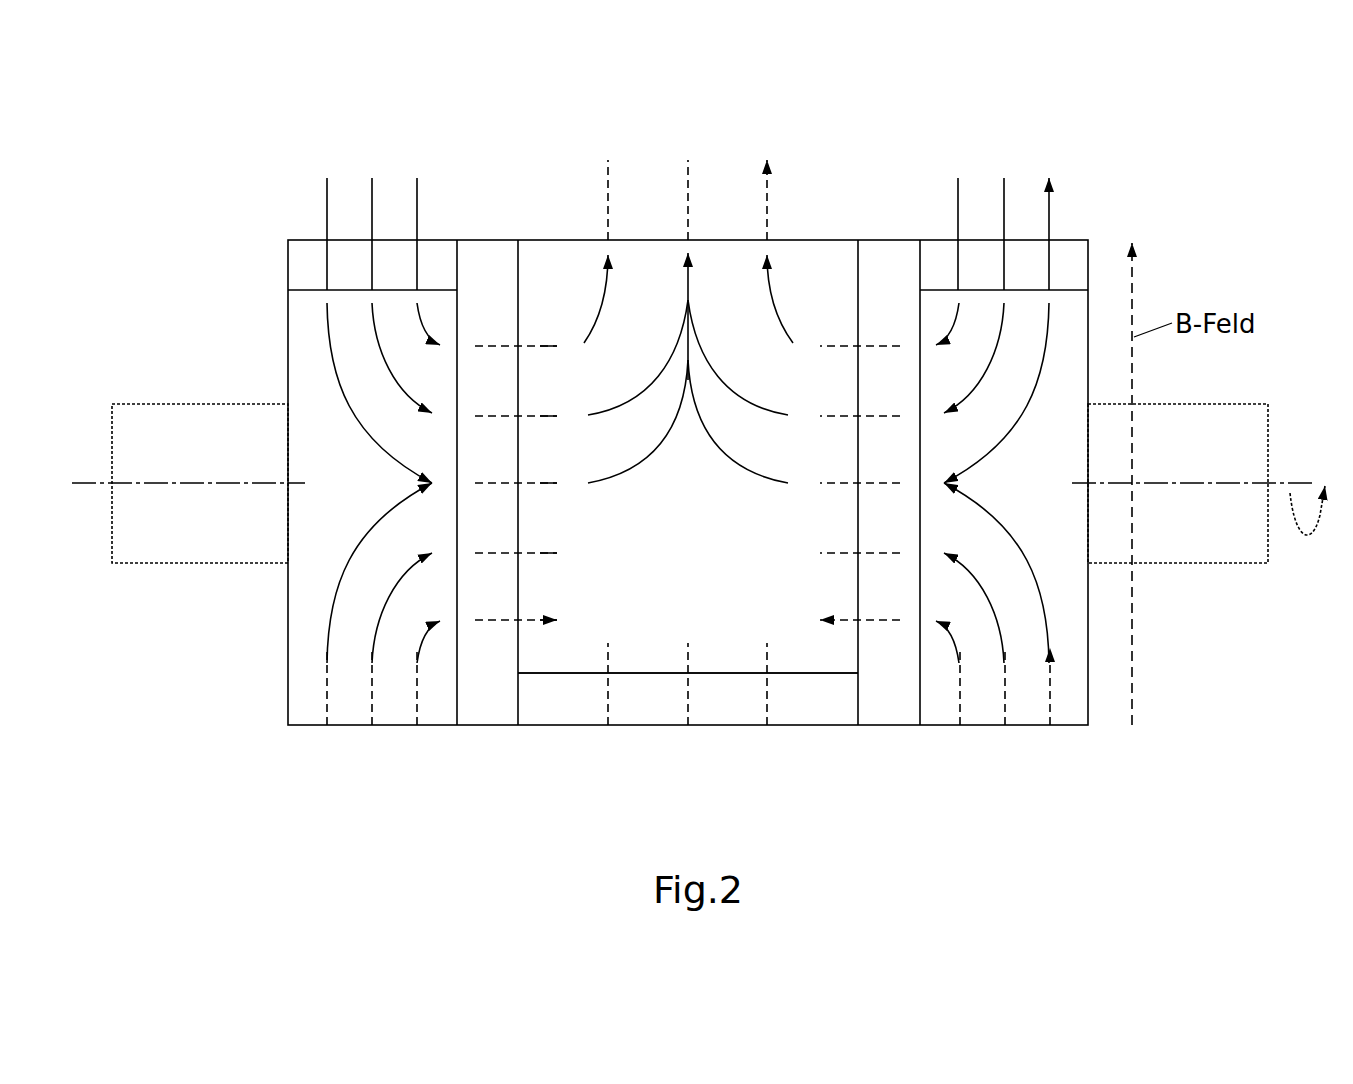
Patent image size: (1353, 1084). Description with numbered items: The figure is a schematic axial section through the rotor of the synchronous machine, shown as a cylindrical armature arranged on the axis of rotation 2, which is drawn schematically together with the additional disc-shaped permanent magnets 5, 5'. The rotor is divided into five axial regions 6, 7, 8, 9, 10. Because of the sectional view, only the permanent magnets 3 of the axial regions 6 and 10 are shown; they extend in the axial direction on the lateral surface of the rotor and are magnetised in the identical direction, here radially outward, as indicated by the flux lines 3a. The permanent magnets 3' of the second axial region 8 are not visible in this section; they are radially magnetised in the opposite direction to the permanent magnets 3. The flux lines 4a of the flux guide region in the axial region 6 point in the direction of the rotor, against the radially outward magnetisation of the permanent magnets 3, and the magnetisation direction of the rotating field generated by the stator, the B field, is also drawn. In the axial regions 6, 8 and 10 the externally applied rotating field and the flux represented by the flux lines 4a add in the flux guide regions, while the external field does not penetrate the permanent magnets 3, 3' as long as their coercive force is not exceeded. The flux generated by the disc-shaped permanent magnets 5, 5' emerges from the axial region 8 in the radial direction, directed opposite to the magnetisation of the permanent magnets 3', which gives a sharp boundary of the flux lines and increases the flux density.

The axis of rotation 2 is at (1188, 533).
The permanent magnet 3 is at (693, 425).
The flux lines 3a is at (322, 215).
The permanent magnet 3' is at (688, 735).
The flux lines 4a is at (328, 686).
The additional disc-shaped permanent magnet 5 is at (863, 394).
The additional disc-shaped permanent magnet 5' is at (516, 483).
The axial region 6 is at (1088, 135).
The axial region 7 is at (920, 135).
The axial region 8 is at (858, 135).
The axial region 9 is at (518, 135).
The axial region 10 is at (457, 135).